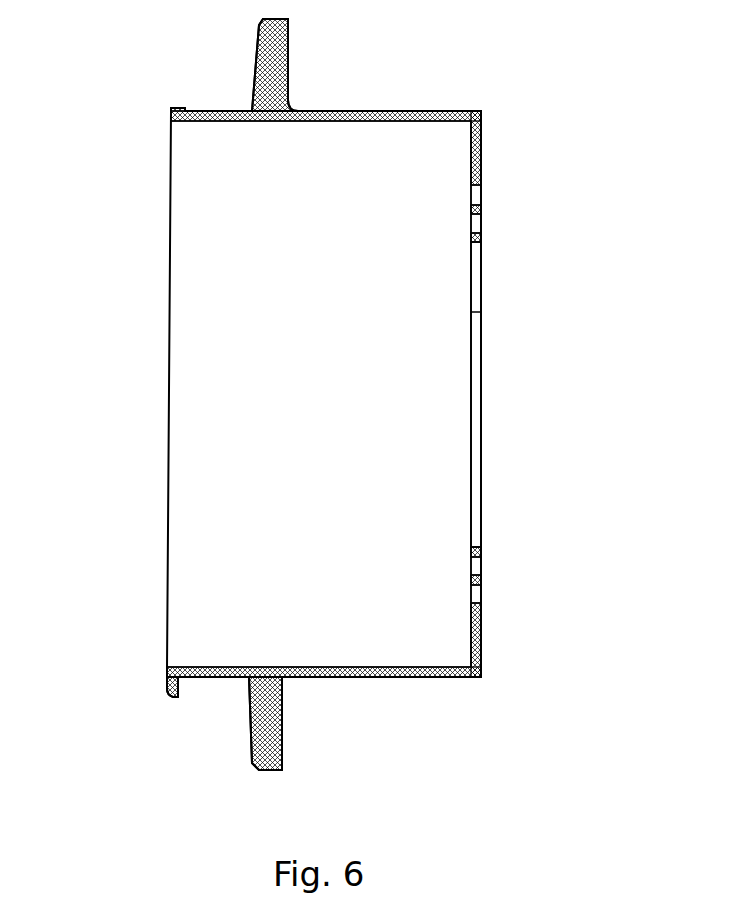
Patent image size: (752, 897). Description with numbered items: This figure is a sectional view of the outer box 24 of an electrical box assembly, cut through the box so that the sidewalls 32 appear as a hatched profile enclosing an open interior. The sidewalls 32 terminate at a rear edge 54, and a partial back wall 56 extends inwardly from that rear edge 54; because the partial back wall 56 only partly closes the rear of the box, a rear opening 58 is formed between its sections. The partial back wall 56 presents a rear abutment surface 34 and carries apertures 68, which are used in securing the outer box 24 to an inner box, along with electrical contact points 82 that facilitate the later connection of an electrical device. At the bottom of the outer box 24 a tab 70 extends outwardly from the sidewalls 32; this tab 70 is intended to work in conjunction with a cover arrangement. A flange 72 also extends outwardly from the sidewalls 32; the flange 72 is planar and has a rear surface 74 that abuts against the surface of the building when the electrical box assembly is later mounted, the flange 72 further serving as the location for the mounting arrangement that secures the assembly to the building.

The outer box 24 is at (130, 186).
The sidewalls 32 is at (342, 122).
The rear surface 74 is at (305, 58).
The rear edge 54 is at (481, 113).
The rear abutment surface 34 is at (500, 146).
The partial back wall 56 is at (481, 170).
The apertures 68 is at (481, 222).
The rear opening 58 is at (481, 312).
The electrical contact points 82 is at (481, 590).
The tab 70 is at (170, 698).
The flange 72 is at (258, 770).